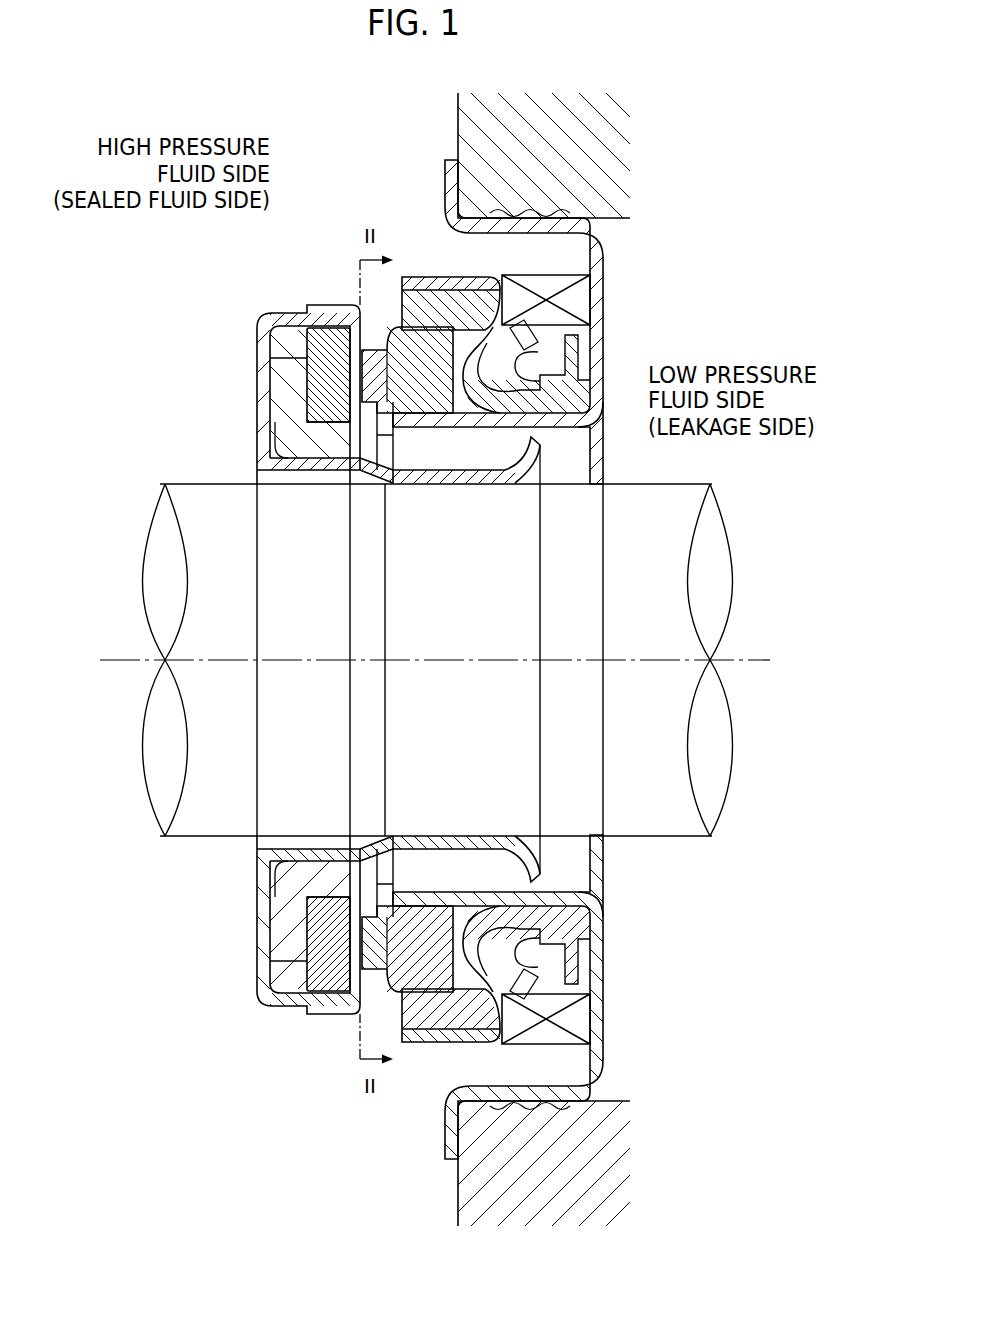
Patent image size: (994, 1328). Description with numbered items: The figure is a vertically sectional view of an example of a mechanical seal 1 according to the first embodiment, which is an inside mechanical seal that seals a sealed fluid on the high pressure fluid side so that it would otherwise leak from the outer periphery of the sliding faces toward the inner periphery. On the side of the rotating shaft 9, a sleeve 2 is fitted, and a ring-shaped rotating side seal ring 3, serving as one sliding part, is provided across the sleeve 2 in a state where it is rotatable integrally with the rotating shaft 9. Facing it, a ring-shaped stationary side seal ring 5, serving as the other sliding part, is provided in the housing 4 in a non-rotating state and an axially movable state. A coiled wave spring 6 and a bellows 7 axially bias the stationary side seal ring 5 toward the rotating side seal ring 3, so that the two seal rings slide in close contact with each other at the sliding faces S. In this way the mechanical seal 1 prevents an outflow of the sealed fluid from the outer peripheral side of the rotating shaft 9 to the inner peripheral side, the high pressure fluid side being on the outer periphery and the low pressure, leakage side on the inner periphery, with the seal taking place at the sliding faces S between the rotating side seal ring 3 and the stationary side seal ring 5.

The mechanical seal 1 is at (146, 333).
The sleeve 2 is at (262, 390).
The rotating side seal ring 3 is at (268, 346).
The housing 4 is at (482, 135).
The stationary side seal ring 5 is at (420, 383).
The coiled wave spring 6 is at (578, 302).
The bellows 7 is at (432, 307).
The rotating shaft 9 is at (213, 835).
The sliding faces S is at (378, 373).